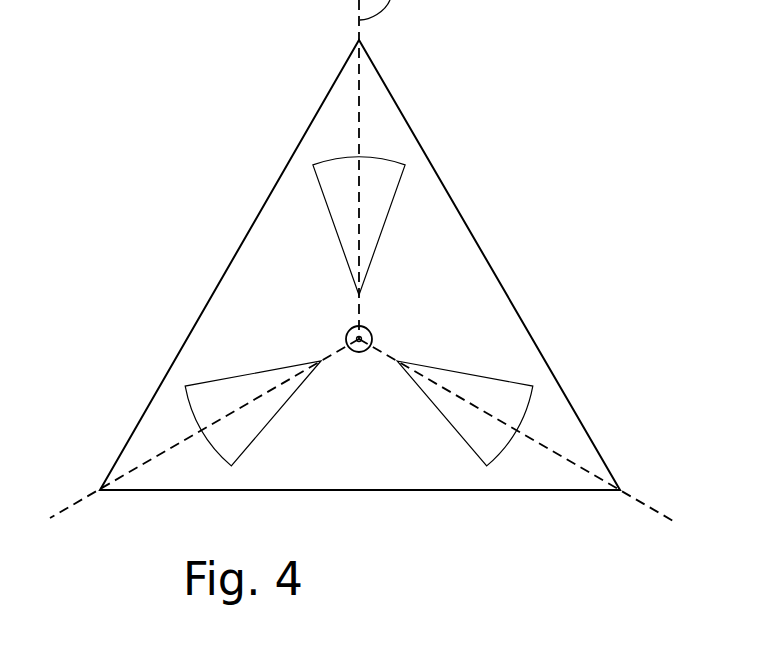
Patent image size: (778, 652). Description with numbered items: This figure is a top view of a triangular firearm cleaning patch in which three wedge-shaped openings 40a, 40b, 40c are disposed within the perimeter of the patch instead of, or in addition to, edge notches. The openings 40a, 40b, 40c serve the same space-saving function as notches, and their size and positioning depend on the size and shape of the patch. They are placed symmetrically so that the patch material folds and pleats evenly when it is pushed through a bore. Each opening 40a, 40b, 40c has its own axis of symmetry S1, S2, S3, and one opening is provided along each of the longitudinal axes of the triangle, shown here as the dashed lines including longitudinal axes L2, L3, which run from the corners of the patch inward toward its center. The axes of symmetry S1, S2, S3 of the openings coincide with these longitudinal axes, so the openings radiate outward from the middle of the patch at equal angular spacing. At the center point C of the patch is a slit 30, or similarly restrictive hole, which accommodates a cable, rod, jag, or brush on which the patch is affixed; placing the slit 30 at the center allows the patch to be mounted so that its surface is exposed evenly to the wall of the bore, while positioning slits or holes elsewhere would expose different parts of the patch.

The slit 30 is at (359, 352).
The center of triangle C is at (372, 333).
The longitudinal axis L2 is at (647, 503).
The longitudinal axis L3 is at (65, 510).
The opening 40a is at (347, 190).
The opening 40b is at (495, 398).
The opening 40c is at (217, 412).
The axis of symmetry S1 is at (360, 200).
The axis of symmetry S2 is at (452, 392).
The axis of symmetry S3 is at (247, 405).